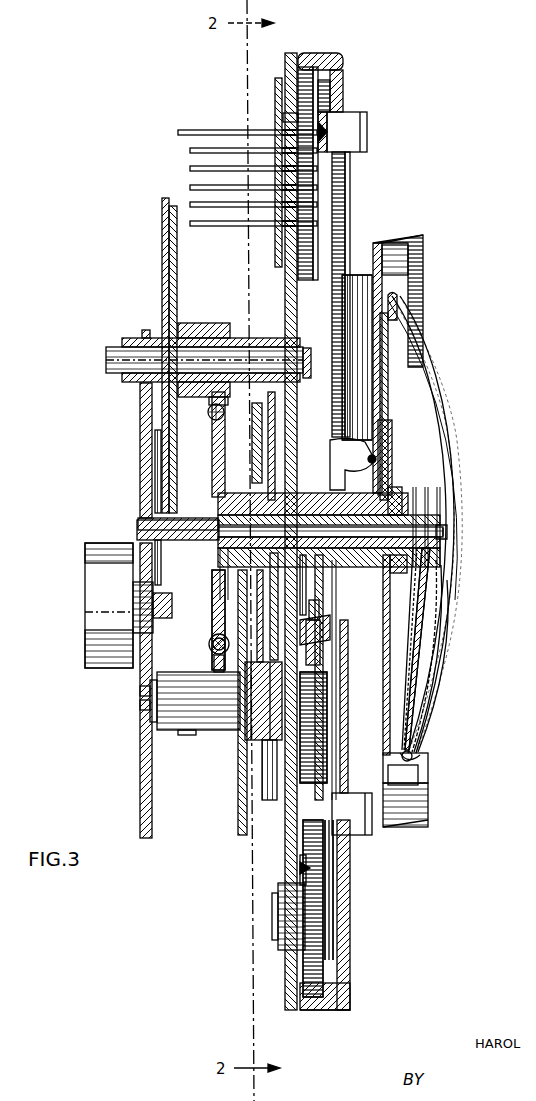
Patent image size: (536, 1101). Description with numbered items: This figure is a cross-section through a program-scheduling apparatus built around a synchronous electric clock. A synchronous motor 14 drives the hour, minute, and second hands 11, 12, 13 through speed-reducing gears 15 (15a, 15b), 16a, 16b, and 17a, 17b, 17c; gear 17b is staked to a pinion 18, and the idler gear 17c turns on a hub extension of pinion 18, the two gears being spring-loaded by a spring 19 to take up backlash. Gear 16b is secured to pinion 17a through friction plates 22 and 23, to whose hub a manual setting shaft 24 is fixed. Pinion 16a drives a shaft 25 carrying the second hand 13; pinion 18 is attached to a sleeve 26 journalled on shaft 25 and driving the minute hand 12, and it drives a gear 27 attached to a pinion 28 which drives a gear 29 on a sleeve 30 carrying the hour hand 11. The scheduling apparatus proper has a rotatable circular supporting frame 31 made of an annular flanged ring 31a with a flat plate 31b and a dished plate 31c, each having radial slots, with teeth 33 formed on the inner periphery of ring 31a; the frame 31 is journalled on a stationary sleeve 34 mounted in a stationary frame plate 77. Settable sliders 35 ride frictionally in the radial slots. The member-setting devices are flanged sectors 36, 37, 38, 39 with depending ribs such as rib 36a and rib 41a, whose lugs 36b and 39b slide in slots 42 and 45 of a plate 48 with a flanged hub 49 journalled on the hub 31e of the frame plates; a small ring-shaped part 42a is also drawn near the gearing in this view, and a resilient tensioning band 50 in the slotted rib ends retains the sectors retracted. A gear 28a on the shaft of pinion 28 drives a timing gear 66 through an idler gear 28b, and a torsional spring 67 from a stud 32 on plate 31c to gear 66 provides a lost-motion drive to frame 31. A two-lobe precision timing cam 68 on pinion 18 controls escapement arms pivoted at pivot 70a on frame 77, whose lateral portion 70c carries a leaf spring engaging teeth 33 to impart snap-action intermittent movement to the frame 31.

The hour hand 11 is at (430, 722).
The minute hand 12 is at (420, 700).
The second hand 13 is at (425, 710).
The synchronous motor 14 is at (85, 612).
The speed-reducing gears 15 is at (178, 679).
The speed-reducing gear 15a is at (168, 628).
The speed-reducing gear 15b is at (161, 572).
The pinion 16a is at (187, 522).
The gear 16b is at (163, 502).
The pinion 17a is at (212, 326).
The gear 17b is at (212, 428).
The idler gear 17c is at (213, 446).
The pinion 18 is at (212, 590).
The spring 19 is at (212, 654).
The friction plate 22 is at (163, 264).
The friction plate 23 is at (177, 264).
The manual setting shaft 24 is at (106, 353).
The shaft 25 is at (434, 531).
The sleeve 26 is at (418, 546).
The gear 27 is at (240, 775).
The pinion 28 is at (276, 742).
The gear 28a is at (322, 727).
The idler gear 28b is at (292, 790).
The gear 29 is at (279, 402).
The sleeve 30 is at (410, 560).
The rotatable circular supporting frame 31 is at (351, 925).
The annular flanged ring 31a is at (322, 1012).
The flat plate 31b is at (346, 872).
The dished plate 31c is at (335, 907).
The hub 31e is at (392, 488).
The stud 32 is at (410, 678).
The teeth 33 is at (300, 850).
The stationary sleeve 34 is at (393, 520).
The slider 35 is at (368, 134).
The flanged sector 36 is at (422, 256).
The depending rib 36a is at (360, 277).
The lug 36b is at (330, 448).
The flanged sector 37 is at (420, 317).
The flanged sector 38 is at (430, 760).
The flanged sector 39 is at (428, 800).
The lug 39b is at (402, 606).
The depending rib 41a is at (428, 780).
The slot 42 is at (225, 622).
The ring 42a is at (210, 643).
The slot 45 is at (340, 397).
The plate 48 is at (341, 690).
The flanged hub 49 is at (392, 477).
The resilient tensioning band 50 is at (405, 568).
The gear 66 is at (318, 703).
The torsional spring 67 is at (310, 610).
The precision timing cam 68 is at (253, 470).
The pivot 70a is at (290, 920).
The laterally extending portion 70c is at (290, 872).
The stationary frame plate 77 is at (291, 1003).